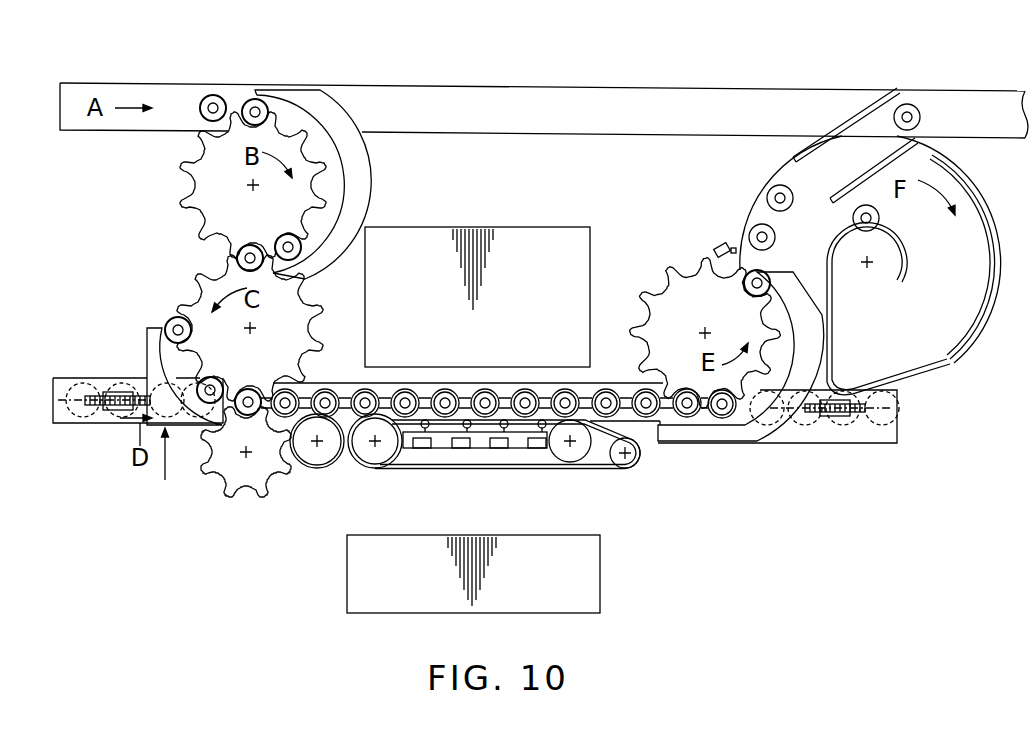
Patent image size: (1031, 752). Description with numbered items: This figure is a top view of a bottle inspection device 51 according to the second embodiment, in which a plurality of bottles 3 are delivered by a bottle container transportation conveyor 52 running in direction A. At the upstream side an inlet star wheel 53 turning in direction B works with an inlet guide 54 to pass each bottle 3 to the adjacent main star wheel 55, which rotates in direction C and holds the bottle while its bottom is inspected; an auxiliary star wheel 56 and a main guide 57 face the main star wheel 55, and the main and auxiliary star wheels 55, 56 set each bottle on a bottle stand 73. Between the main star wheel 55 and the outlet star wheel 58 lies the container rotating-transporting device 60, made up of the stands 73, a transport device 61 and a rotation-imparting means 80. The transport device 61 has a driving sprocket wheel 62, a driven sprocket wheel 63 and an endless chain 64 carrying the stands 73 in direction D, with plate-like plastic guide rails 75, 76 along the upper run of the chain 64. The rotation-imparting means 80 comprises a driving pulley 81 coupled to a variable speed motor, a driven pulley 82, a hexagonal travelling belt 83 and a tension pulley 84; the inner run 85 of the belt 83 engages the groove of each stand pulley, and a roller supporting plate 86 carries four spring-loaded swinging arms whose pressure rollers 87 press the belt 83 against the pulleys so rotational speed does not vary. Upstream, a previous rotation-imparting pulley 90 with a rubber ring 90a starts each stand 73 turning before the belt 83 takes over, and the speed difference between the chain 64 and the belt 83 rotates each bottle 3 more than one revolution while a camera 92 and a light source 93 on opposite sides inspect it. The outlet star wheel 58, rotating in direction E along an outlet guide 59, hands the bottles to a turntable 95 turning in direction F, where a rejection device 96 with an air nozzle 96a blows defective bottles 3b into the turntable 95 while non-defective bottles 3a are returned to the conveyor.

The bottle 3 is at (368, 390).
The non-defective bottle 3a is at (791, 192).
The defective bottle 3b is at (881, 222).
The bottle inspection device 51 is at (536, 80).
The bottle container transportation conveyor 52 is at (677, 98).
The inlet star wheel 53 is at (196, 203).
The inlet guide 54 is at (363, 191).
The main star wheel 55 is at (205, 280).
The auxiliary star wheel 56 is at (241, 494).
The main guide 57 is at (152, 348).
The outlet star wheel 58 is at (660, 300).
The outlet guide 59 is at (740, 437).
The container rotating-transporting device 60 is at (383, 474).
The transport device 61 is at (138, 441).
The driving sprocket wheel 62 is at (855, 423).
The driven sprocket wheel 63 is at (92, 410).
The endless chain 64 is at (800, 427).
The bottle stand 73 is at (486, 390).
The plate-like plastic guide rail 75 is at (633, 425).
The plate-like plastic guide rail 76 is at (628, 384).
The rotation-imparting means 80 is at (521, 476).
The driving pulley 81 is at (630, 460).
The driven pulley 82 is at (387, 450).
The travelling belt 83 is at (612, 473).
The tension pulley 84 is at (580, 452).
The inner run 85 is at (490, 430).
The roller supporting plate 86 is at (517, 442).
The pressure roller 87 is at (430, 428).
The previous rotation-imparting pulley 90 is at (328, 452).
The rubber ring 90a is at (310, 470).
The camera 92 is at (593, 584).
The light source 93 is at (505, 230).
The turntable 95 is at (933, 353).
The rejection device 96 is at (714, 248).
The air nozzle 96a is at (733, 248).